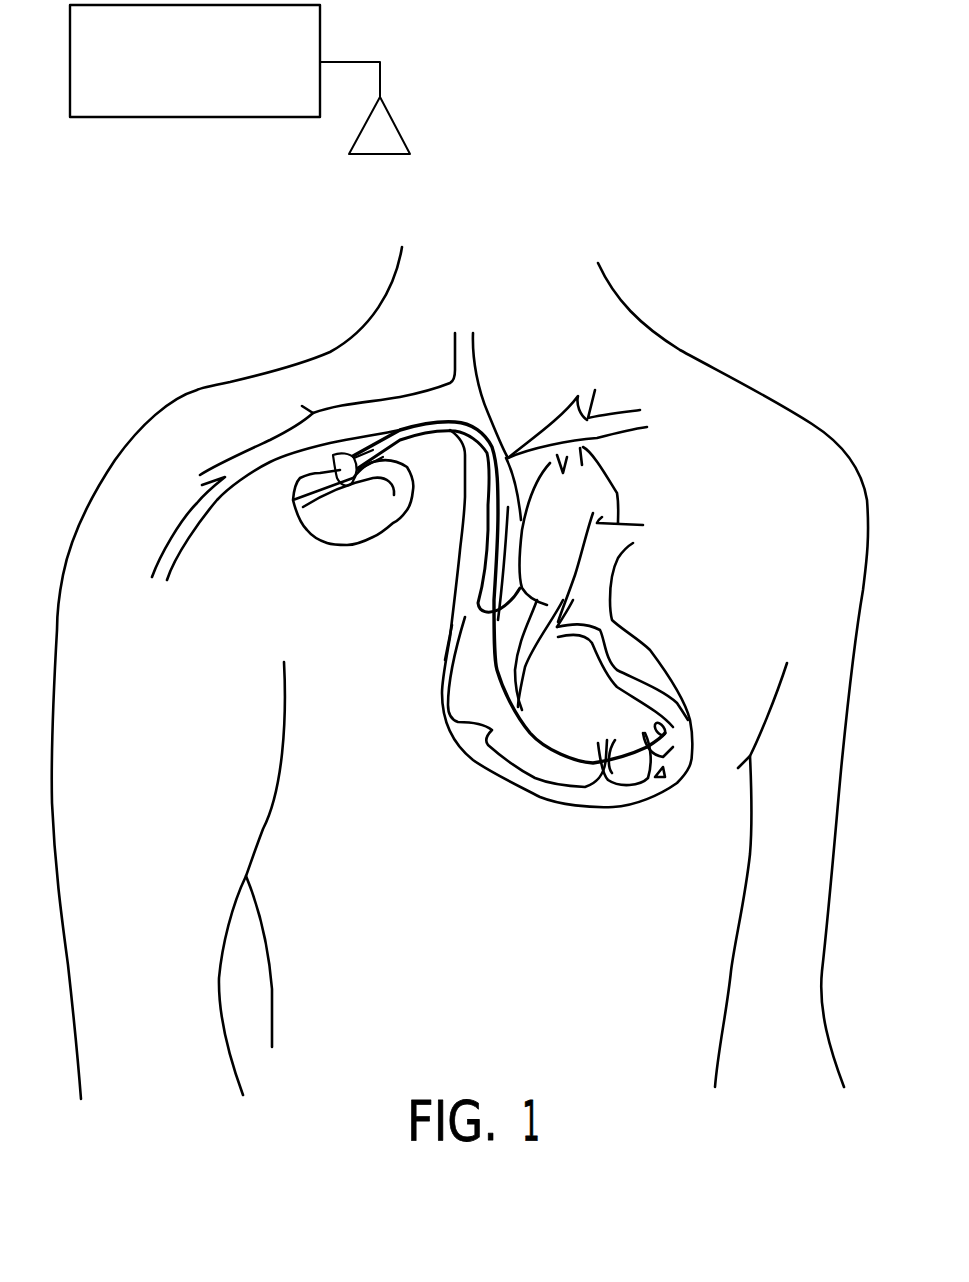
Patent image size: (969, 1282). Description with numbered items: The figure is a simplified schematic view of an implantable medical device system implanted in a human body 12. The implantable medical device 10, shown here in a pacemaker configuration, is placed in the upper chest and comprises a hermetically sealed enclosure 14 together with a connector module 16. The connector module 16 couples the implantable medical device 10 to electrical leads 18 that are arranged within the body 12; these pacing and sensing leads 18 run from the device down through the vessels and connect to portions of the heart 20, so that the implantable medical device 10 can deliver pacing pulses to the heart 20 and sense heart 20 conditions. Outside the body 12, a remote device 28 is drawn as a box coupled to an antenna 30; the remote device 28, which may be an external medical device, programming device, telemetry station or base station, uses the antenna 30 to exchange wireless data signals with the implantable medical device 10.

The implantable medical device 10 is at (319, 510).
The human body 12 is at (712, 340).
The hermetically sealed enclosure 14 is at (372, 510).
The connector module 16 is at (320, 480).
The electrical leads 18 is at (474, 555).
The heart 20 is at (567, 805).
The remote device 28 is at (182, 98).
The antenna 30 is at (403, 137).